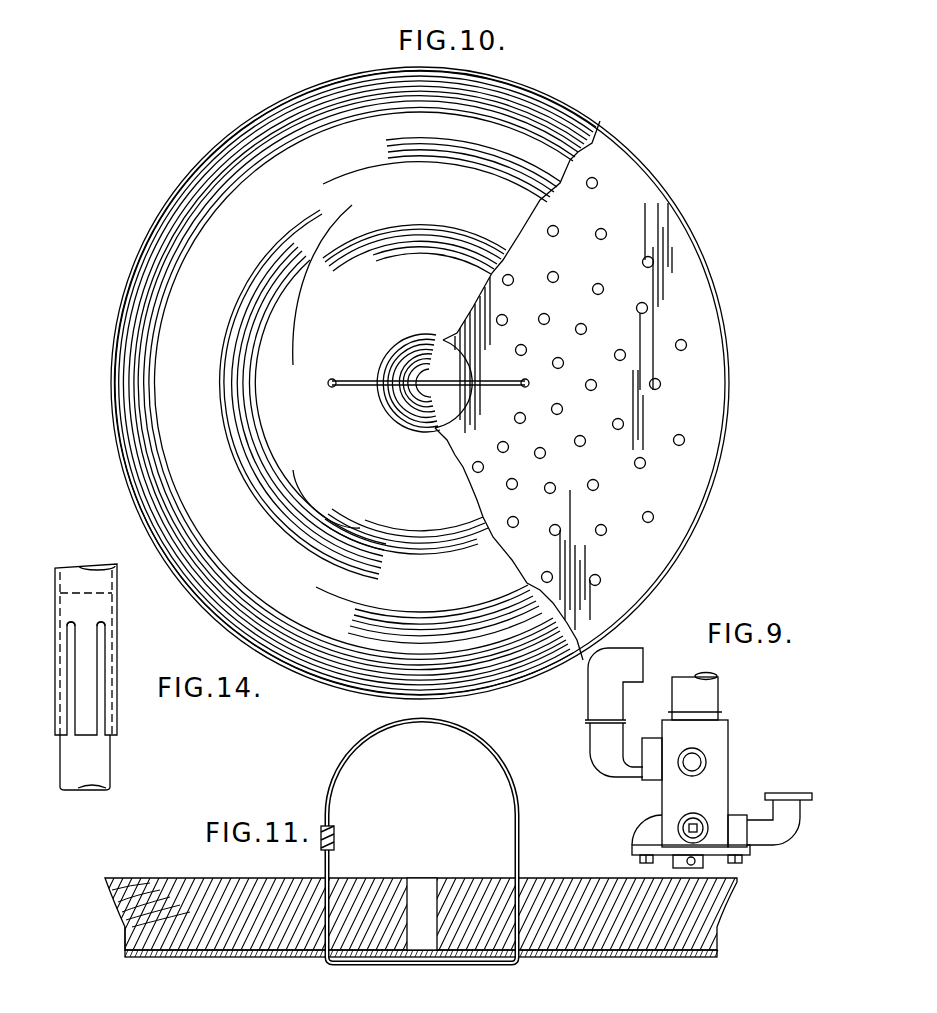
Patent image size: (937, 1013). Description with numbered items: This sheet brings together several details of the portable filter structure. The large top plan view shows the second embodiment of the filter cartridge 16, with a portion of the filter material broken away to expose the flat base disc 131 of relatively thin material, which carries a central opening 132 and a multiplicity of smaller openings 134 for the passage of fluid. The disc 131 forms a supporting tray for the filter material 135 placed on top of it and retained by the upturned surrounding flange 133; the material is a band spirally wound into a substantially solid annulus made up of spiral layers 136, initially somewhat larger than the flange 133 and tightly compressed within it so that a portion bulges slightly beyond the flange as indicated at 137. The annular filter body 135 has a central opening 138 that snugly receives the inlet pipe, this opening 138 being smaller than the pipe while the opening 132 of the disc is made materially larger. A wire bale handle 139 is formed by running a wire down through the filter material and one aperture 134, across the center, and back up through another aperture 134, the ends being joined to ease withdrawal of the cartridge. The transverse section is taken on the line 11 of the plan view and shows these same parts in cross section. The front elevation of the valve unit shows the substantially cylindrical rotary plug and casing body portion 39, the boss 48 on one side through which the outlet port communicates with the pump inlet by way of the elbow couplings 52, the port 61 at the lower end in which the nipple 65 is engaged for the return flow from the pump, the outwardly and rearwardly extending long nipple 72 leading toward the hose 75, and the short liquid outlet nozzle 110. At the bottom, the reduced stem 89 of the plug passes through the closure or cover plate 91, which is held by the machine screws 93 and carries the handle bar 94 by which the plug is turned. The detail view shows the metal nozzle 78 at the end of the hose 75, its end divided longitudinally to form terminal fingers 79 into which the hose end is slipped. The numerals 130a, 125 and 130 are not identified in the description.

In FIG. 10, the filter cartridge 16 is at (577, 94).
In FIG. 11, the filter cartridge 16 is at (261, 875).
In FIG. 10, the bulged portion of filtering material 137 is at (602, 128).
In FIG. 11, the bulged portion of filtering material 137 is at (110, 896).
In FIG. 10, the base disc 131 is at (680, 277).
In FIG. 11, the base disc 131 is at (620, 963).
In FIG. 10, the upturned surrounding flange 133 is at (725, 345).
In FIG. 11, the upturned surrounding flange 133 is at (123, 942).
In FIG. 10, the smaller openings 134 is at (682, 446).
In FIG. 11, the smaller openings 134 is at (193, 957).
In FIG. 10, the wire bale handle 139 is at (367, 389).
In FIG. 11, the wire bale handle 139 is at (339, 778).
In FIG. 10, the section line 11— 11 is at (105, 383).
In FIG. 14, the metal nozzle 78 is at (118, 611).
In FIG. 14, the terminal fingers 79 is at (80, 687).
In FIG. 14, the hose 75 is at (100, 762).
In FIG. 9, the elbow couplings 52 is at (595, 693).
In FIG. 9, the liquid outlet nozzle 110 is at (712, 698).
In FIG. 9, the rotary plug and casing body portion 39 is at (715, 742).
In FIG. 9, the long nipple 72 is at (708, 762).
In FIG. 9, the boss 48 is at (650, 772).
In FIG. 9, the port 61 is at (750, 820).
In FIG. 9, the nipple 65 is at (783, 828).
In FIG. 9, the closure or cover plate 91 is at (642, 850).
In FIG. 9, the machine screws 93 is at (642, 860).
In FIG. 9, the handle bar 94 is at (708, 860).
In FIG. 9, the stem 89 is at (700, 868).
In FIG. 11, the filter material 135 is at (170, 913).
In FIG. 11, the central opening of filter body 138 is at (437, 893).
In FIG. 11, the spiral layers 136 is at (563, 897).
In FIG. 11, the central opening of disc 132 is at (472, 960).
In FIG. 11, the base 130a is at (309, 1003).
In FIG. 11, the housing 125 is at (91, 1008).
In FIG. 11, the support 130 is at (156, 1009).